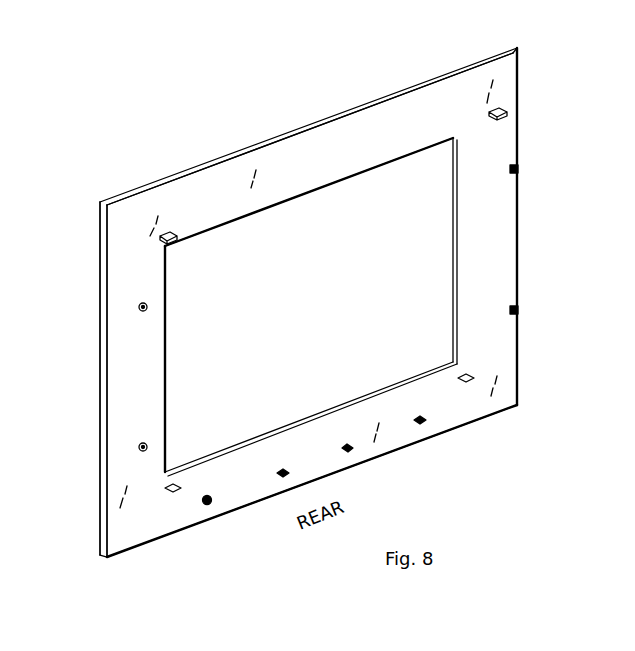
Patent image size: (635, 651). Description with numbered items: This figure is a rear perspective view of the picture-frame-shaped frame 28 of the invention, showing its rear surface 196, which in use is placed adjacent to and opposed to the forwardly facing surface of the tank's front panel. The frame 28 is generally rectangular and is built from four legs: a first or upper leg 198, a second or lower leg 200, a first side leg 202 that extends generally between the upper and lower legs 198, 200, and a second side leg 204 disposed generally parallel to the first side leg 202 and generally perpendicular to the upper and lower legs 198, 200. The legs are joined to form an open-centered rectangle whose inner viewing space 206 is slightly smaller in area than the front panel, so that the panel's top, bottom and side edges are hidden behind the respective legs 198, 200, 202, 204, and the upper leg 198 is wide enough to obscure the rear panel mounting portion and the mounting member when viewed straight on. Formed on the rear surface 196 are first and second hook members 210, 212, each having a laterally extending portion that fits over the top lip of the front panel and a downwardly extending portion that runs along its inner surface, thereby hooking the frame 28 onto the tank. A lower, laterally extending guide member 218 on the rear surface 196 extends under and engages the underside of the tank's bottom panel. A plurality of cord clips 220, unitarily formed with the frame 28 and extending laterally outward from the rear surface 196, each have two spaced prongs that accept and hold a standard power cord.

The frame 28 is at (208, 127).
The rear surface 196 is at (332, 174).
The upper leg 198 is at (330, 118).
The lower leg 200 is at (225, 515).
The first side leg 202 is at (519, 265).
The second side leg 204 is at (100, 332).
The inner viewing space 206 is at (330, 284).
The first hook member 210 is at (497, 108).
The second hook member 212 is at (167, 236).
The guide member 218 is at (468, 377).
The cord clips 220 is at (519, 168).